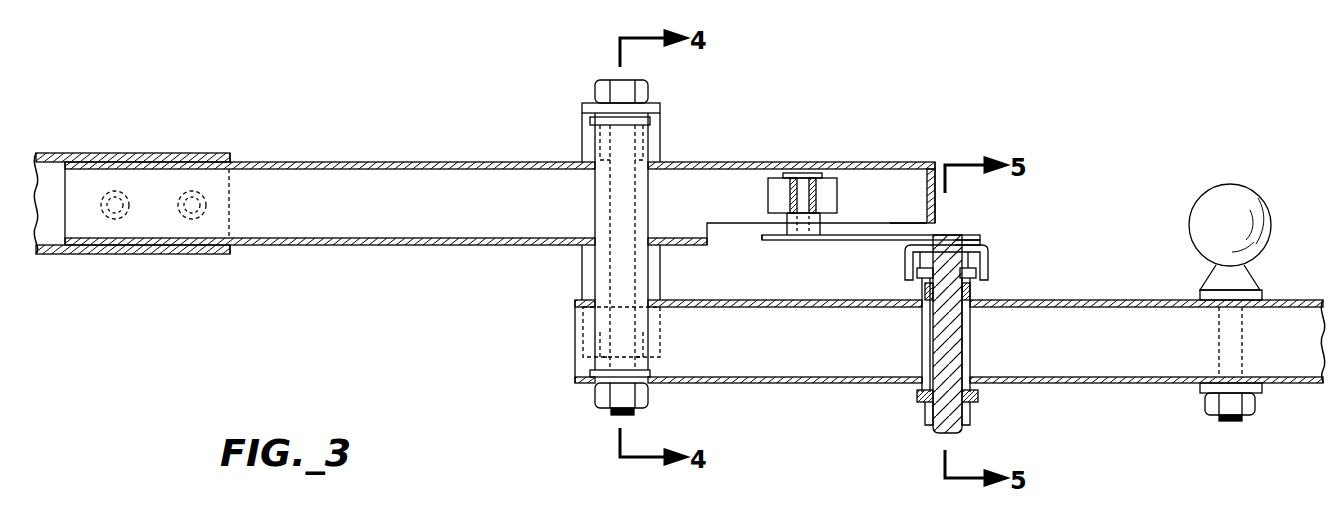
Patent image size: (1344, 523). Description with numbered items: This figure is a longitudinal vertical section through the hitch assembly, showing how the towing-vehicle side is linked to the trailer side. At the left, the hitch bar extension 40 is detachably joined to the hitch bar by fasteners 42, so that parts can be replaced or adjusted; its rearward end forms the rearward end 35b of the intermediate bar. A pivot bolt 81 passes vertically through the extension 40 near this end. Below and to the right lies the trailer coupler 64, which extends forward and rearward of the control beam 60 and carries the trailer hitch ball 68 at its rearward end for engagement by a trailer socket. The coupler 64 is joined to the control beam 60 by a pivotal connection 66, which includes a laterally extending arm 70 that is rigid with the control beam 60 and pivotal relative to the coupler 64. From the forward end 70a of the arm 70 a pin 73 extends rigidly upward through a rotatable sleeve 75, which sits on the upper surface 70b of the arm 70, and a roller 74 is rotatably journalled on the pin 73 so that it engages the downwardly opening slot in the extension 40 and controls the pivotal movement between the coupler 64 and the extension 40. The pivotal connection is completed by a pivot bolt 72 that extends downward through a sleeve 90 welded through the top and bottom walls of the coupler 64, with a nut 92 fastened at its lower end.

The hitch bar extension 40 is at (365, 161).
The fasteners 42 is at (118, 229).
The pivot bolt 81 is at (600, 80).
The rearward end of intermediate bar 35b is at (903, 161).
The upper surface of arm 70b is at (891, 230).
The arm 70 is at (846, 242).
The forward end of arm 70a is at (769, 243).
The pin 73 is at (805, 176).
The roller 74 is at (839, 191).
The rotatable sleeve 75 is at (790, 200).
The pivotal connection 66 is at (975, 236).
The control beam 60 is at (990, 266).
The sleeve 90 is at (921, 350).
The nut 92 is at (975, 410).
The pivot bolt 72 is at (937, 433).
The trailer coupler 64 is at (1075, 299).
The trailer hitch ball 68 is at (1222, 185).